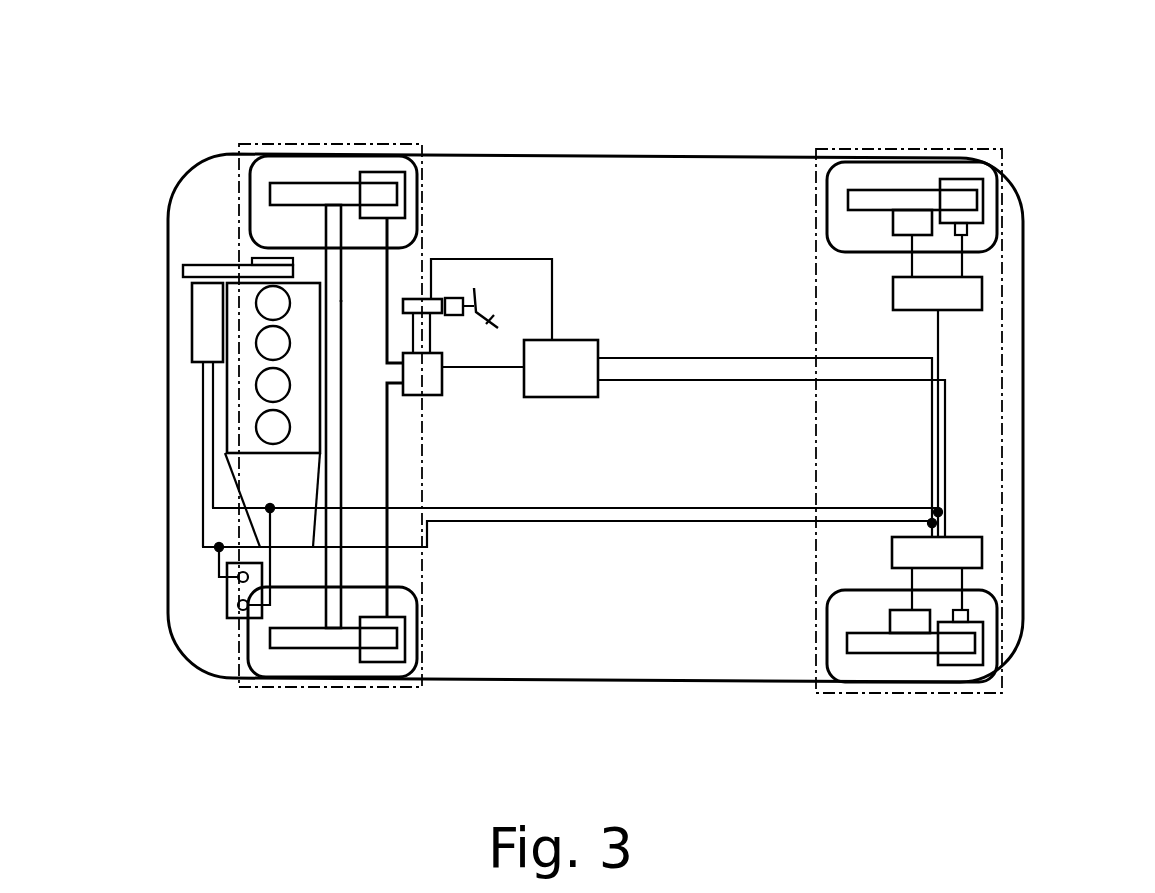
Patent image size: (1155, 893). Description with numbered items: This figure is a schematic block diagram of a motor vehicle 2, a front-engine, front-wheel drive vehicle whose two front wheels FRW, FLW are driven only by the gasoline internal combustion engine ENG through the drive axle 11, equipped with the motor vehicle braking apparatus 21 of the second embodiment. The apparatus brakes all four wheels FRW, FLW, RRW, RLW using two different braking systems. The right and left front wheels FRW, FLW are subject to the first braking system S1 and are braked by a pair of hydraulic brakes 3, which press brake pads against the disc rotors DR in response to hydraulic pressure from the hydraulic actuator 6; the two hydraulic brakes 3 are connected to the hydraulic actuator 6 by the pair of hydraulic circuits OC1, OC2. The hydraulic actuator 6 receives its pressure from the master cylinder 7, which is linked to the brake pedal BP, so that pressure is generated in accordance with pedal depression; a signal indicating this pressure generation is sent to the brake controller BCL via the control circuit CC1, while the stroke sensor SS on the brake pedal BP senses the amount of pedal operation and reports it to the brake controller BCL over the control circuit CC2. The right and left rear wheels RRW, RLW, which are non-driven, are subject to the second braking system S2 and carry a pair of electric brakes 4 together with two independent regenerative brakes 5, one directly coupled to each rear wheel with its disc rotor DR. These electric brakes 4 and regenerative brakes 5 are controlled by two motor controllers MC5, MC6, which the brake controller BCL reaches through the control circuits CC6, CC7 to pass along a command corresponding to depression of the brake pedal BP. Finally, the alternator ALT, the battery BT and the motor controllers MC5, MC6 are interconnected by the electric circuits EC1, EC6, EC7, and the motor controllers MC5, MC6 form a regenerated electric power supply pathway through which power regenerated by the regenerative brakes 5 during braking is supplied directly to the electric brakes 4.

The motor vehicle 2 is at (622, 682).
The motor vehicle braking apparatus 21 is at (570, 190).
The hydraulic brakes 3 is at (383, 172).
The electric brakes 4 is at (973, 180).
The regenerative brake 5 is at (893, 225).
The hydraulic actuator 6 is at (430, 396).
The master cylinder 7 is at (432, 299).
The drive axle 11 is at (342, 297).
The first braking system S1 is at (353, 688).
The second braking system S2 is at (837, 694).
The right front wheel FRW is at (243, 178).
The left front wheel FLW is at (278, 676).
The right rear wheel RRW is at (905, 175).
The left rear wheel RLW is at (918, 682).
The disc rotor DR is at (282, 197).
The hydraulic circuit OC1 is at (387, 272).
The hydraulic circuit OC2 is at (387, 566).
The control circuit CC1 is at (480, 367).
The control circuit CC2 is at (533, 259).
The control circuit CC6 is at (668, 358).
The control circuit CC7 is at (657, 381).
The stroke sensor SS is at (456, 315).
The brake pedal BP is at (494, 310).
The brake controller BCL is at (560, 397).
The motor controller MC5 is at (982, 293).
The motor controller MC6 is at (982, 553).
The electric circuit EC1 is at (207, 472).
The electric circuit EC6 is at (590, 508).
The electric circuit EC7 is at (945, 427).
The gasoline internal combustion engine ENG is at (255, 395).
The alternator ALT is at (200, 318).
The battery BT is at (228, 592).